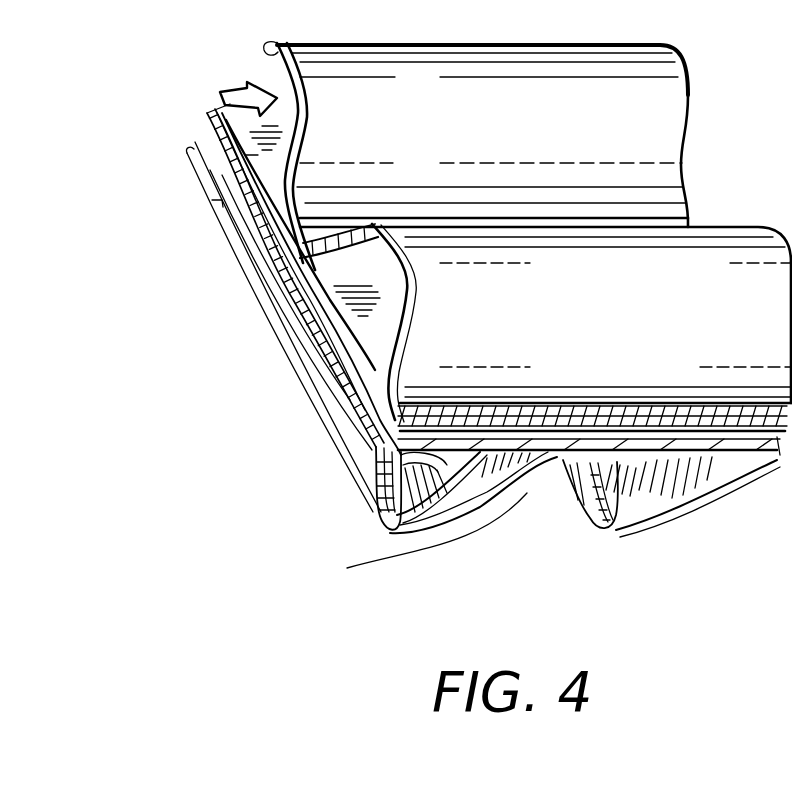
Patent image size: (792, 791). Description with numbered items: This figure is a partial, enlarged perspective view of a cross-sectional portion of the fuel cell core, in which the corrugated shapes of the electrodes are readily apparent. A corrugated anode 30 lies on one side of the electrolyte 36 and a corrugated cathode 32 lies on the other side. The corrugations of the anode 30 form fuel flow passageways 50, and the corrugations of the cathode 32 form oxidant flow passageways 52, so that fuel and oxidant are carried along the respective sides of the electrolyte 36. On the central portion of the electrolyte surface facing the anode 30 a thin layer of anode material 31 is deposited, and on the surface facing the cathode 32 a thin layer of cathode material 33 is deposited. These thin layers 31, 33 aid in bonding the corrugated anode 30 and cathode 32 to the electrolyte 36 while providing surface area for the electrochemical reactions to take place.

The anode 30 is at (243, 147).
The electrolyte 36 is at (235, 179).
The fuel flow passageways 50 is at (342, 193).
The thin layer of anode material 31 is at (360, 363).
The thin layer of cathode material 33 is at (383, 477).
The oxidant flow passageways 52 is at (390, 532).
The cathode 32 is at (617, 538).